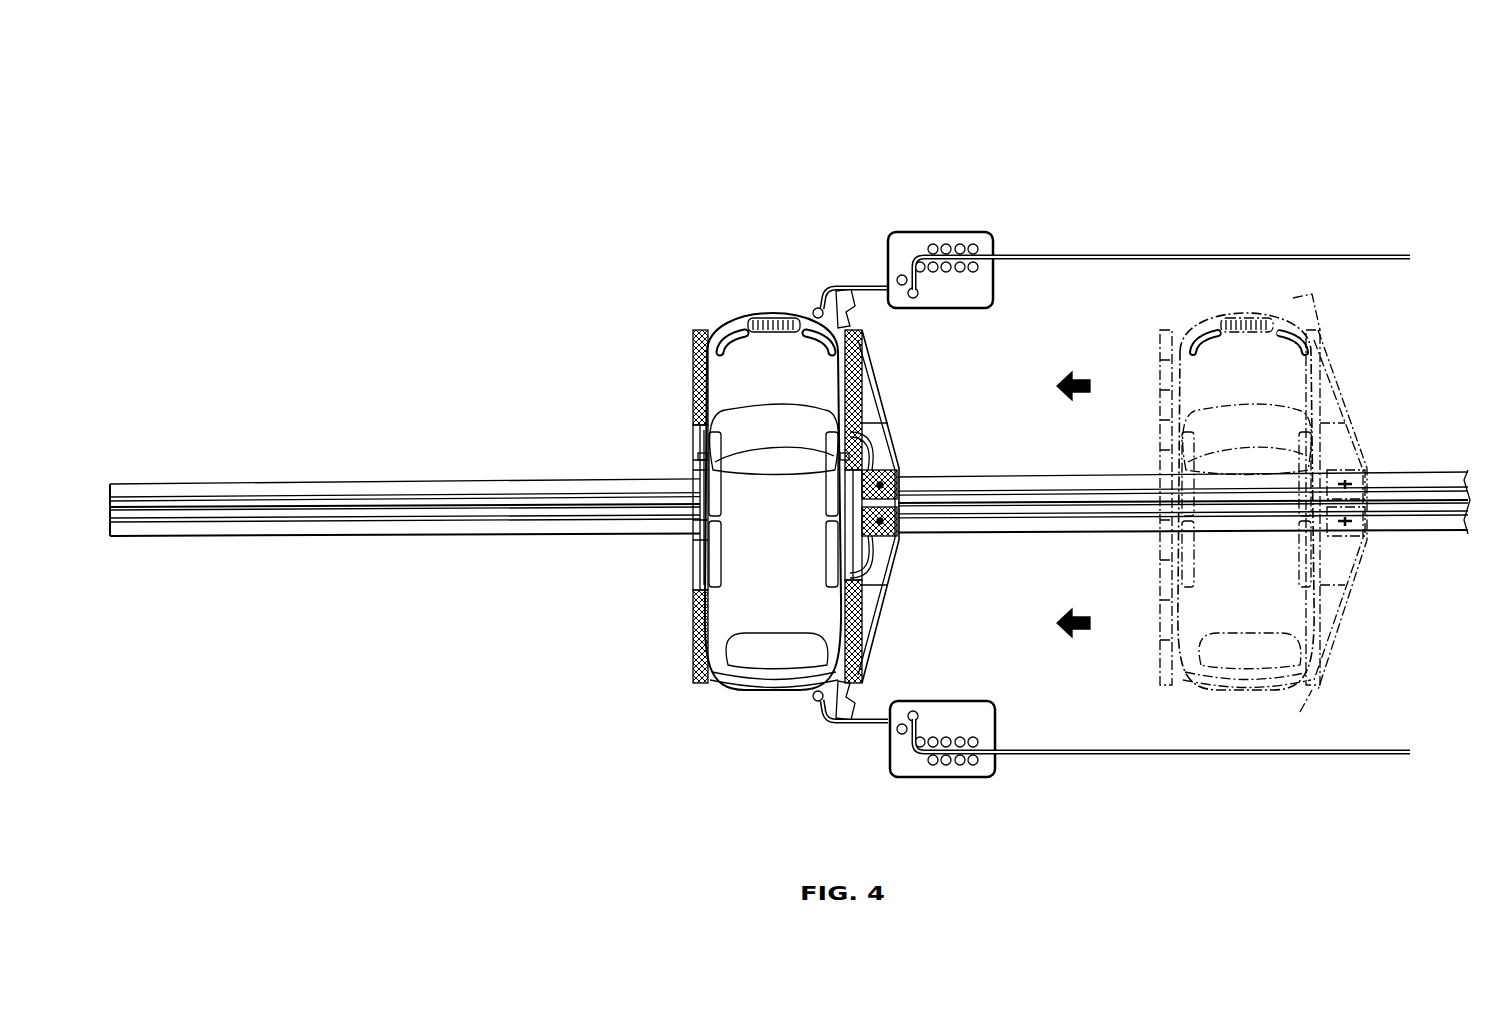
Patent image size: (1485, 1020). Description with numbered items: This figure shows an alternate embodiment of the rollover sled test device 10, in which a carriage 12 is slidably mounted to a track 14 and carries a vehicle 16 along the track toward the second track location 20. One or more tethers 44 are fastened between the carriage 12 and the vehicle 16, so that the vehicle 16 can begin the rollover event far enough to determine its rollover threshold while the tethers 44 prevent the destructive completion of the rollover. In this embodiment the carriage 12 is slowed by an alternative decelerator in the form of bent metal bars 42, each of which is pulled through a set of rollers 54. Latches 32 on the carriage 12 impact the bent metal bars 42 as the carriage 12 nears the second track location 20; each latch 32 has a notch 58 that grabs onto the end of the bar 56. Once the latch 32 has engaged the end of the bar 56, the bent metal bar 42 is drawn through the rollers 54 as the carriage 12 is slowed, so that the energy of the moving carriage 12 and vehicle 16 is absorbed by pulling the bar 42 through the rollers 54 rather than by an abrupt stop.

The rollover sled test device 10 is at (1222, 186).
The carriage 12 is at (910, 408).
The track 14 is at (1010, 505).
The vehicle 16 is at (786, 560).
The second track location 20 is at (360, 505).
The latch 32 is at (855, 318).
The bent metal bar 42 is at (968, 208).
The tether 44 is at (873, 462).
The rollers 54 is at (909, 240).
The end of the bar 56 is at (815, 309).
The notch 58 is at (838, 287).